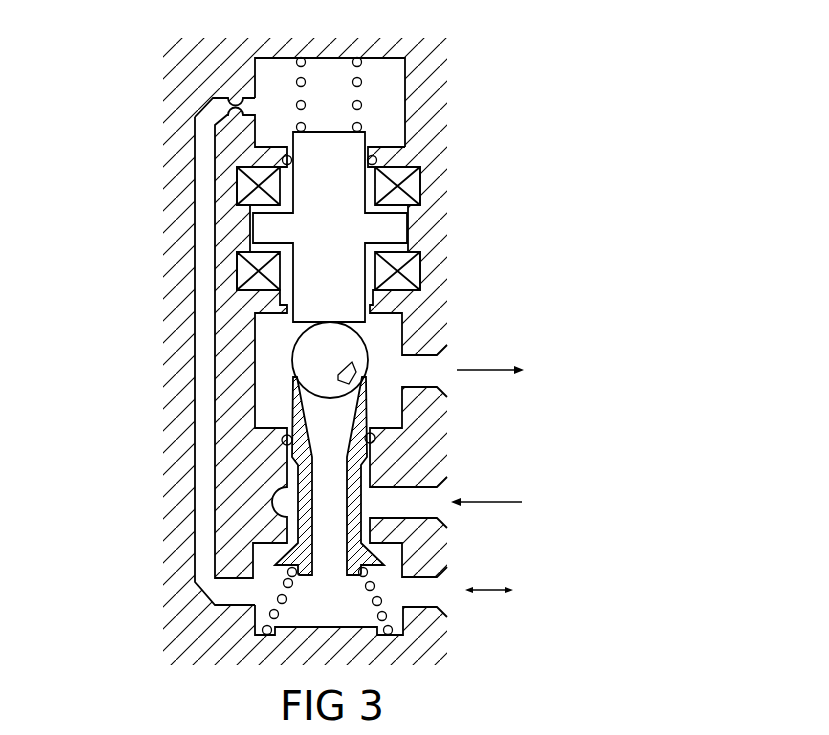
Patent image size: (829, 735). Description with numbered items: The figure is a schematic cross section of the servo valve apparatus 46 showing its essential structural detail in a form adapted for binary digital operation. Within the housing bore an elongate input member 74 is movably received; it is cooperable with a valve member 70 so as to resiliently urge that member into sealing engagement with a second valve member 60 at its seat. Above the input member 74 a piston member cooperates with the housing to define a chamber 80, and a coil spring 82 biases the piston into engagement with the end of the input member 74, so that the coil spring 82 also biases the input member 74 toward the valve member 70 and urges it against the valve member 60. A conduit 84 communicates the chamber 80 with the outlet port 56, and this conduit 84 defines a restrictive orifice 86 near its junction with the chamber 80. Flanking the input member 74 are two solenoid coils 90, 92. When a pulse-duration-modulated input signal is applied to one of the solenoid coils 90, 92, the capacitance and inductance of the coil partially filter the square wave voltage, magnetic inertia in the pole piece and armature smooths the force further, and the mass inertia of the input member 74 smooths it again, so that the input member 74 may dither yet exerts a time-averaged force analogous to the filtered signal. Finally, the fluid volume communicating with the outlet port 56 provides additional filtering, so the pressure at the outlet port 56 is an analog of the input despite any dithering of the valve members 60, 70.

The servo valve apparatus 46 is at (100, 300).
The restrictive orifice 86 is at (235, 100).
The coil spring 82 is at (323, 63).
The chamber 80 is at (395, 112).
The input member 74 is at (341, 252).
The valve member 70 is at (341, 365).
The solenoid coil 90 is at (410, 182).
The solenoid coil 92 is at (410, 268).
The conduit 84 is at (197, 460).
The valve member 60 is at (357, 480).
The outlet port 56 is at (437, 607).